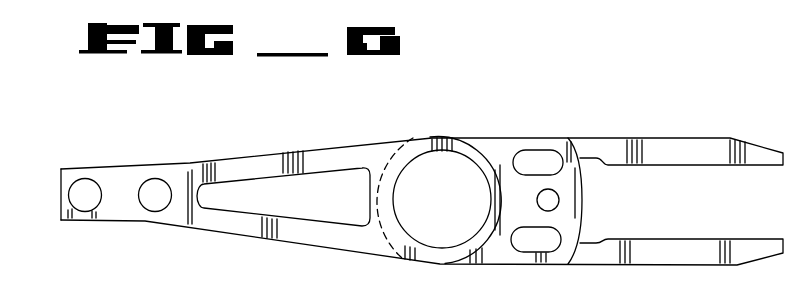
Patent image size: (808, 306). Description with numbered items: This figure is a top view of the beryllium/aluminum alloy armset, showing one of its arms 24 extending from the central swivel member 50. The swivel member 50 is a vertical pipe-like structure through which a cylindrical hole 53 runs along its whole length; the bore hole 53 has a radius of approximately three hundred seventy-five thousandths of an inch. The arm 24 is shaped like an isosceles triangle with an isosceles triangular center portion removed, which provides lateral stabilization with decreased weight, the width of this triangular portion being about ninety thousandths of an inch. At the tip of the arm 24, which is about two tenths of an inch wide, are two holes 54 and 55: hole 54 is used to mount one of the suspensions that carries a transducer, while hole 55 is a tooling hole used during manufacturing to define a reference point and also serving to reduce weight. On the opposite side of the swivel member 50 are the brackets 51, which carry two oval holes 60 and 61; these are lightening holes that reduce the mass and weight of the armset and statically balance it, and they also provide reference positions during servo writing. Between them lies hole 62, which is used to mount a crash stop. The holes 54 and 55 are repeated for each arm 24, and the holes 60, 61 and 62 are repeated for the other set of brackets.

The arm 24 is at (246, 162).
The swivel member 50 is at (478, 149).
The bracket 51 is at (690, 237).
The cylindrical hole 53 is at (428, 177).
The hole 54 is at (83, 188).
The hole 55 is at (150, 188).
The oval hole 60 is at (536, 165).
The oval hole 61 is at (527, 236).
The hole 62 is at (548, 200).